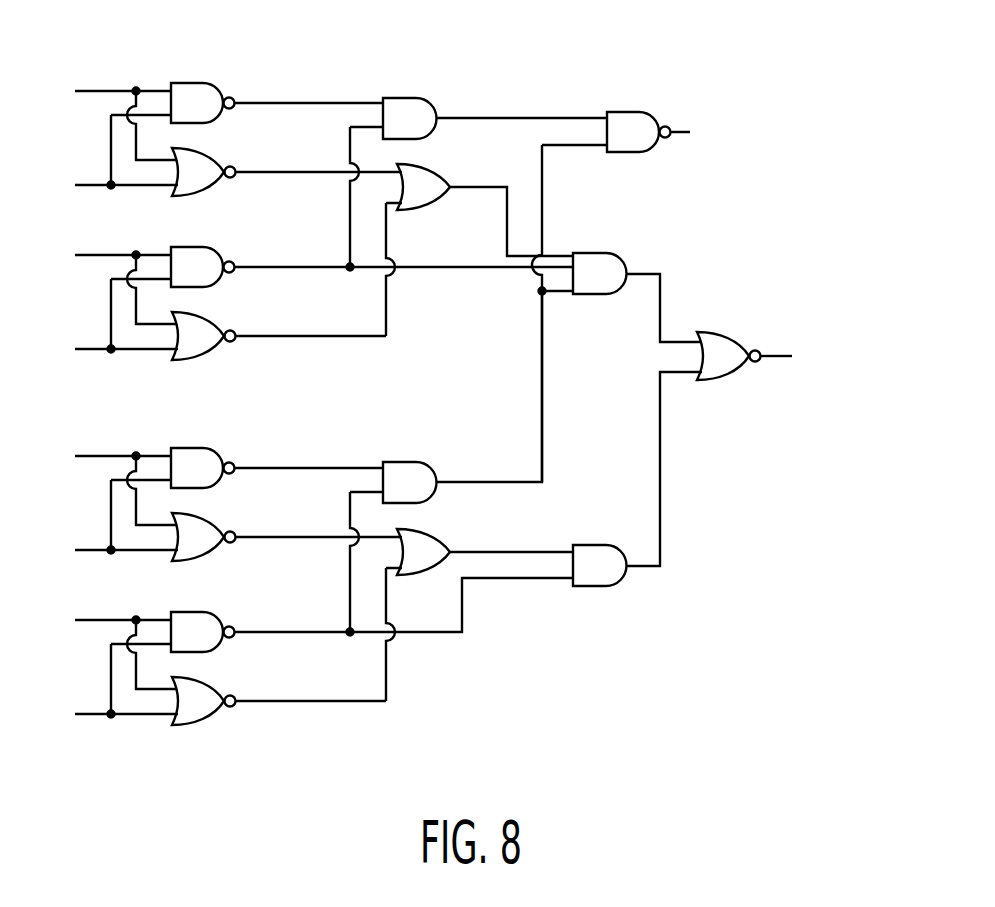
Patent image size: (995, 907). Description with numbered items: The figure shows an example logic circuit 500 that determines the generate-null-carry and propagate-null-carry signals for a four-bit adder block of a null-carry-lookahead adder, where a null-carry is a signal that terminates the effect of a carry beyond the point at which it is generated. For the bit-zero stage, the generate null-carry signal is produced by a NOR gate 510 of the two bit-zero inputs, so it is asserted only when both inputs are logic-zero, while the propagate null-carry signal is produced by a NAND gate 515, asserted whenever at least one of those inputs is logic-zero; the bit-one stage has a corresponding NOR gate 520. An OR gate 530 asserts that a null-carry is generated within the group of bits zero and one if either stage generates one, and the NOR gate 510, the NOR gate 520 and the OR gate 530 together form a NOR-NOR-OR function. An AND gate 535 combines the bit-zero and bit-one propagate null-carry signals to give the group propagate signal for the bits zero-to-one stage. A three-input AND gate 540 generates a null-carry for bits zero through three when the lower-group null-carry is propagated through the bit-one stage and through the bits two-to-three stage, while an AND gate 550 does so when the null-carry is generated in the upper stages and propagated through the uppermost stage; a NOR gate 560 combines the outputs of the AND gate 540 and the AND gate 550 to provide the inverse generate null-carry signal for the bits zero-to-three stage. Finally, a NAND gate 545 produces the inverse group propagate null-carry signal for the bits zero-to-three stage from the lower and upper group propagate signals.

The logic circuit 500 is at (465, 372).
The NOR gate 510 is at (195, 197).
The NAND gate 515 is at (193, 83).
The NOR gate 520 is at (198, 361).
The OR gate 530 is at (410, 210).
The AND gate 535 is at (412, 98).
The three-input AND gate 540 is at (612, 253).
The NAND gate 545 is at (630, 112).
The AND gate 550 is at (590, 586).
The NOR gate 560 is at (732, 332).